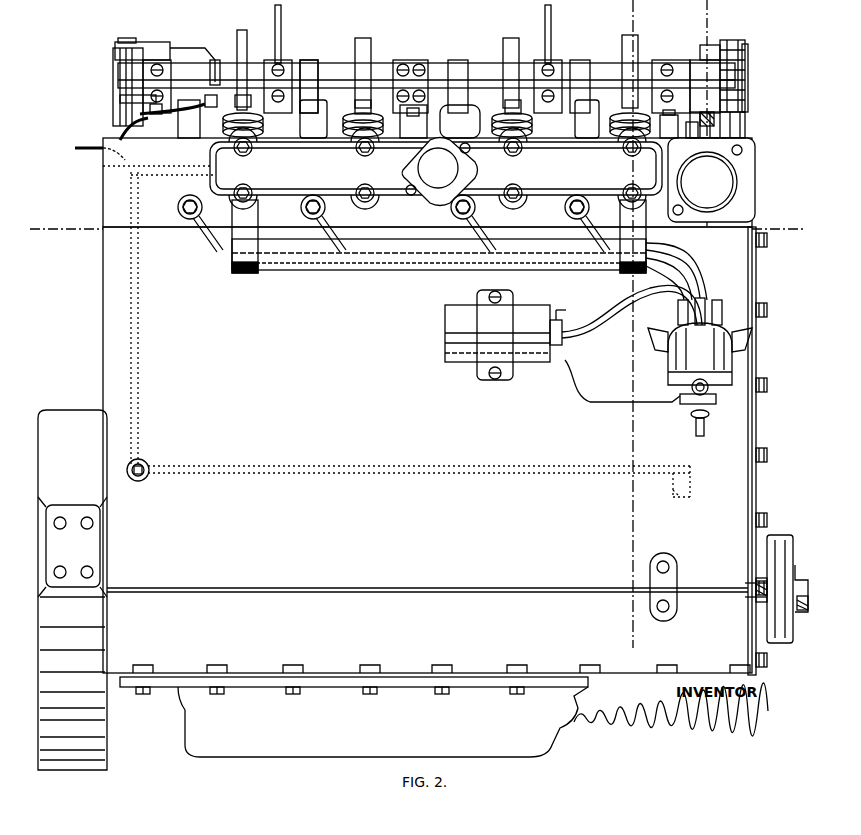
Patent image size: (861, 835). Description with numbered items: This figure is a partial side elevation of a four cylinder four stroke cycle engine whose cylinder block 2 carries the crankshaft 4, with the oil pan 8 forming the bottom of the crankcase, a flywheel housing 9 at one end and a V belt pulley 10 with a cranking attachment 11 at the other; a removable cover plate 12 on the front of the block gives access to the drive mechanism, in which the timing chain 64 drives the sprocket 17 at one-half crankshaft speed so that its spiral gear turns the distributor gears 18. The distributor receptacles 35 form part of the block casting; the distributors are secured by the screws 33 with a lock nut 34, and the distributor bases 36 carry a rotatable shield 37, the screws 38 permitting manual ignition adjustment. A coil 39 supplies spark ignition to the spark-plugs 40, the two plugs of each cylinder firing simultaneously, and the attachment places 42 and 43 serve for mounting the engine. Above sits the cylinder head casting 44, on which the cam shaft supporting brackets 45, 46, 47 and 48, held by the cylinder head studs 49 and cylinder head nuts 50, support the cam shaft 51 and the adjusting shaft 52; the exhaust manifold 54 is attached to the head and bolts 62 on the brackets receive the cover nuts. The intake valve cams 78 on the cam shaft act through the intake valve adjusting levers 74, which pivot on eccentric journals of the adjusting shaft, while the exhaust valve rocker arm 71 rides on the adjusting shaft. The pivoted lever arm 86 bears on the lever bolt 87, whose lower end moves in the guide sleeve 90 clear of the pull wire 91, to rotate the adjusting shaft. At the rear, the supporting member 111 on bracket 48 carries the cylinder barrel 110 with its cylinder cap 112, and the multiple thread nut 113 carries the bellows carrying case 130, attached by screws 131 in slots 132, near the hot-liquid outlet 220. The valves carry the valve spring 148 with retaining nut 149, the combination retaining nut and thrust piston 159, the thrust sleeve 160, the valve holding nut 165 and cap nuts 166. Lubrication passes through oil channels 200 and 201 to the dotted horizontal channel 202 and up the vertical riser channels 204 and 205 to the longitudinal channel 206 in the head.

The cylinder block 2 is at (103, 352).
The crankshaft 4 is at (636, 637).
The oil pan 8 is at (200, 722).
The flywheel housing 9 is at (84, 425).
The V belt pulley 10 is at (774, 545).
The cranking attachment 11 is at (800, 572).
The cover plate 12 is at (757, 480).
The sprocket 17 is at (60, 242).
The distributor gears 18 is at (540, 250).
The screws 33 is at (696, 430).
The lock nut 34 is at (691, 415).
The distributor receptacles 35 is at (735, 396).
The distributor bases 36 is at (682, 379).
The shield 37 is at (680, 399).
The screws 38 is at (708, 396).
The coil 39 is at (460, 324).
The spark-plugs 40 is at (178, 207).
The place of attachment 42 is at (673, 582).
The place of attachment 43 is at (78, 552).
The cylinder head casting 44 is at (103, 210).
The cam shaft supporting bracket 45 is at (152, 42).
The cam shaft supporting bracket 46 is at (284, 58).
The cam shaft supporting bracket 47 is at (416, 60).
The cam shaft supporting bracket 48 is at (660, 60).
The cylinder head studs 49 is at (146, 114).
The cylinder head nuts 50 is at (135, 122).
The cam shaft 51 is at (487, 64).
The adjusting shaft 52 is at (480, 80).
The exhaust manifold 54 is at (235, 162).
The bolts 62 is at (281, 20).
The timing chain 64 is at (746, 100).
The exhaust valve rocker arm 71 is at (244, 58).
The intake valve adjusting levers 74 is at (165, 60).
The intake valve cams 78 is at (309, 60).
The pivoted lever arm 86 is at (113, 62).
The lever bolt 87 is at (218, 60).
The guide sleeve 90 is at (206, 99).
The pull wire 91 is at (75, 148).
The cylinder barrel 110 is at (713, 48).
The supporting member 111 is at (700, 60).
The cylinder cap 112 is at (745, 50).
The multiple thread nut 113 is at (665, 117).
The bellows carrying case 130 is at (737, 126).
The screws 131 is at (693, 128).
The slots 132 is at (697, 117).
The valve spring 148 is at (508, 118).
The valve spring retaining nut 149 is at (370, 118).
The combination valve spring retaining nut and thrust piston 159 is at (420, 114).
The thrust sleeve 160 is at (466, 118).
The valve holding nut 165 is at (322, 118).
The cap nuts 166 is at (326, 108).
The oil channel 200 is at (690, 494).
The oil channel 201 is at (690, 477).
The horizontal channel 202 is at (590, 466).
The vertical riser channel 204 is at (138, 292).
The vertical riser channel 205 is at (135, 200).
The channel 206 is at (120, 170).
The outlet 220 is at (722, 172).